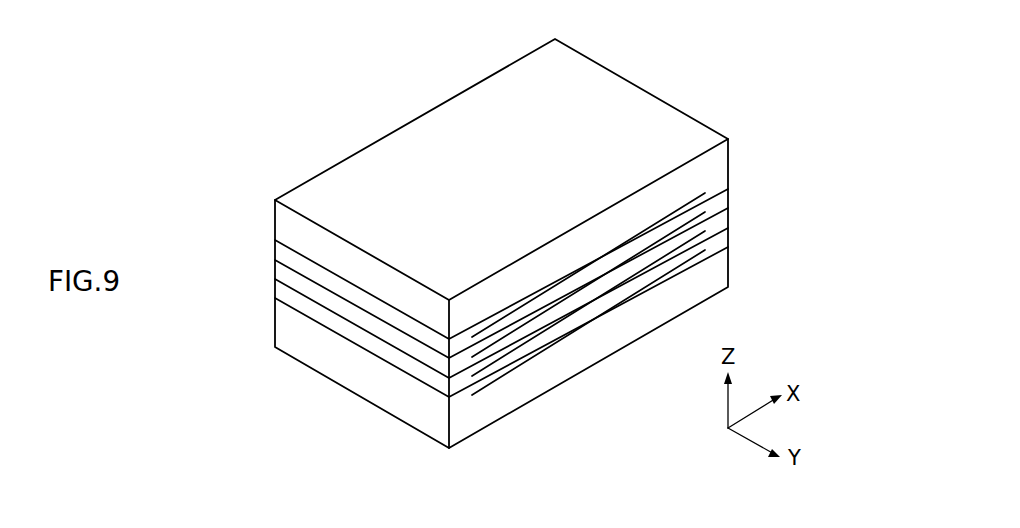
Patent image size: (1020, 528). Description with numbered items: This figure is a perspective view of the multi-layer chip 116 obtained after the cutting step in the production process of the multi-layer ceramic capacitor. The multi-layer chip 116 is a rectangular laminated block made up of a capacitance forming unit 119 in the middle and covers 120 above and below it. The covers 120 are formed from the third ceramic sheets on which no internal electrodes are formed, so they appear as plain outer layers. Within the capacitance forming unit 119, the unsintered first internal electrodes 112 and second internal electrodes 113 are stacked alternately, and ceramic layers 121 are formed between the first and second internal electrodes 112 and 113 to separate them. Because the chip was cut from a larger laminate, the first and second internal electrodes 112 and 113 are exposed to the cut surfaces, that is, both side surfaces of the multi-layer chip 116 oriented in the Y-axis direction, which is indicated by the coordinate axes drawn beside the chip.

The multi-layer chip 116 is at (660, 68).
The covers 120 is at (272, 201).
The capacitance forming unit 119 is at (272, 241).
The ceramic layers 121 is at (647, 258).
The first internal electrodes 112 is at (358, 286).
The second internal electrodes 113 is at (728, 189).